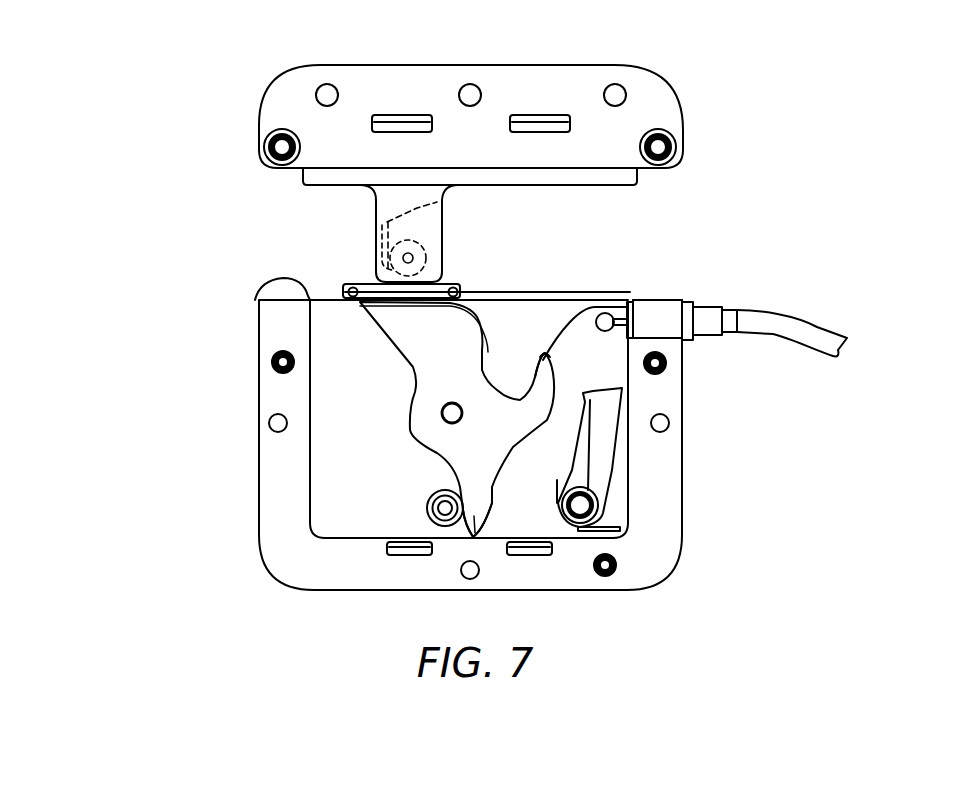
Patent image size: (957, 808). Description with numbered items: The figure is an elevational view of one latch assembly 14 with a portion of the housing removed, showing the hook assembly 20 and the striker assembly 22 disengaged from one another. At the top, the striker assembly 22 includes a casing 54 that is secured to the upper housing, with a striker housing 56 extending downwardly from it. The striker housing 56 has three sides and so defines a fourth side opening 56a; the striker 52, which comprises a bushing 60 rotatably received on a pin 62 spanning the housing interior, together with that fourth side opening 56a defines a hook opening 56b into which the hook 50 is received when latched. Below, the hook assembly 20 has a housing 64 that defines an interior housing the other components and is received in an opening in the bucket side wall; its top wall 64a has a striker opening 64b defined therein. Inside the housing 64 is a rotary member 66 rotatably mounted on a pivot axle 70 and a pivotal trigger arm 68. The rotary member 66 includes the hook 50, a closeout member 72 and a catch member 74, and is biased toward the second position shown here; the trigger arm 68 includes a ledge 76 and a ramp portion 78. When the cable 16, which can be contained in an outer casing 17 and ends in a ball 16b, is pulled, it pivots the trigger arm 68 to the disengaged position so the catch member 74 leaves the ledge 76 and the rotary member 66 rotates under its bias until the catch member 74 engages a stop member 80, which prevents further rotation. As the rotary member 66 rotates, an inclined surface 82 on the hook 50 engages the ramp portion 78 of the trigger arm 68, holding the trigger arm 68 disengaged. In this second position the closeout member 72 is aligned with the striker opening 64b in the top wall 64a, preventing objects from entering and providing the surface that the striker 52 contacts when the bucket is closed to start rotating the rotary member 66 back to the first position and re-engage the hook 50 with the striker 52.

The latch assembly 14 is at (137, 364).
The cable 16 is at (638, 298).
The ball 16b is at (607, 313).
The outer casing 17 is at (793, 313).
The hook assembly 20 is at (740, 481).
The striker assembly 22 is at (738, 93).
The hook 50 is at (542, 350).
The striker 52 is at (393, 253).
The casing 54 is at (592, 77).
The striker housing 56 is at (388, 207).
The fourth side opening 56a is at (466, 219).
The hook opening 56b is at (420, 230).
The bushing 60 is at (388, 265).
The pin 62 is at (412, 260).
The housing 64 is at (648, 547).
The top wall 64a is at (257, 287).
The striker opening 64b is at (401, 300).
The rotary member 66 is at (412, 412).
The trigger arm 68 is at (594, 472).
The pivot axle 70 is at (446, 422).
The closeout member 72 is at (392, 302).
The catch member 74 is at (474, 535).
The ledge 76 is at (588, 398).
The ramp portion 78 is at (548, 358).
The stop member 80 is at (446, 527).
The inclined surface 82 is at (550, 357).